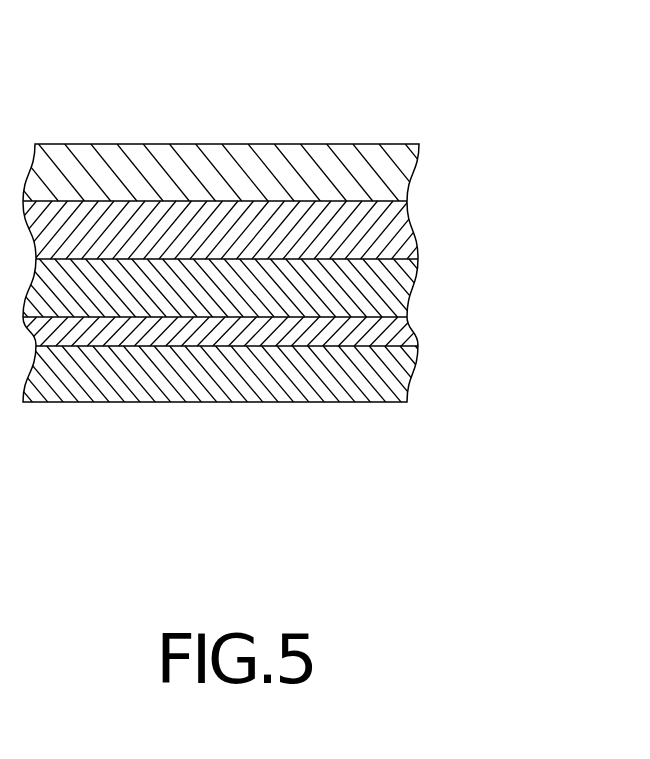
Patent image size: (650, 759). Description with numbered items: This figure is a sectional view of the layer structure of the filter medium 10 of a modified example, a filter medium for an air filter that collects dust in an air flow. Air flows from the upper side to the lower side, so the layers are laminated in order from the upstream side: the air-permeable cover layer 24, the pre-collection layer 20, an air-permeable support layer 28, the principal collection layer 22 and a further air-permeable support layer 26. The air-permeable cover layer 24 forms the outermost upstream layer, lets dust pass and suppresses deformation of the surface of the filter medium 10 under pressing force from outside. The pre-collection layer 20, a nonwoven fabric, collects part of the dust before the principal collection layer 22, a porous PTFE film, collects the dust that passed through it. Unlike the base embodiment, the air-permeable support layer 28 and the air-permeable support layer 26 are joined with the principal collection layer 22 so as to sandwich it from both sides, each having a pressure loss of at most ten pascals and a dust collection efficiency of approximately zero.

The filter medium 10 is at (426, 131).
The air-permeable cover layer 24 is at (415, 174).
The pre-collection layer 20 is at (413, 236).
The air-permeable support layer 28 is at (405, 288).
The principal collection layer 22 is at (407, 338).
The air-permeable support layer 26 is at (402, 372).